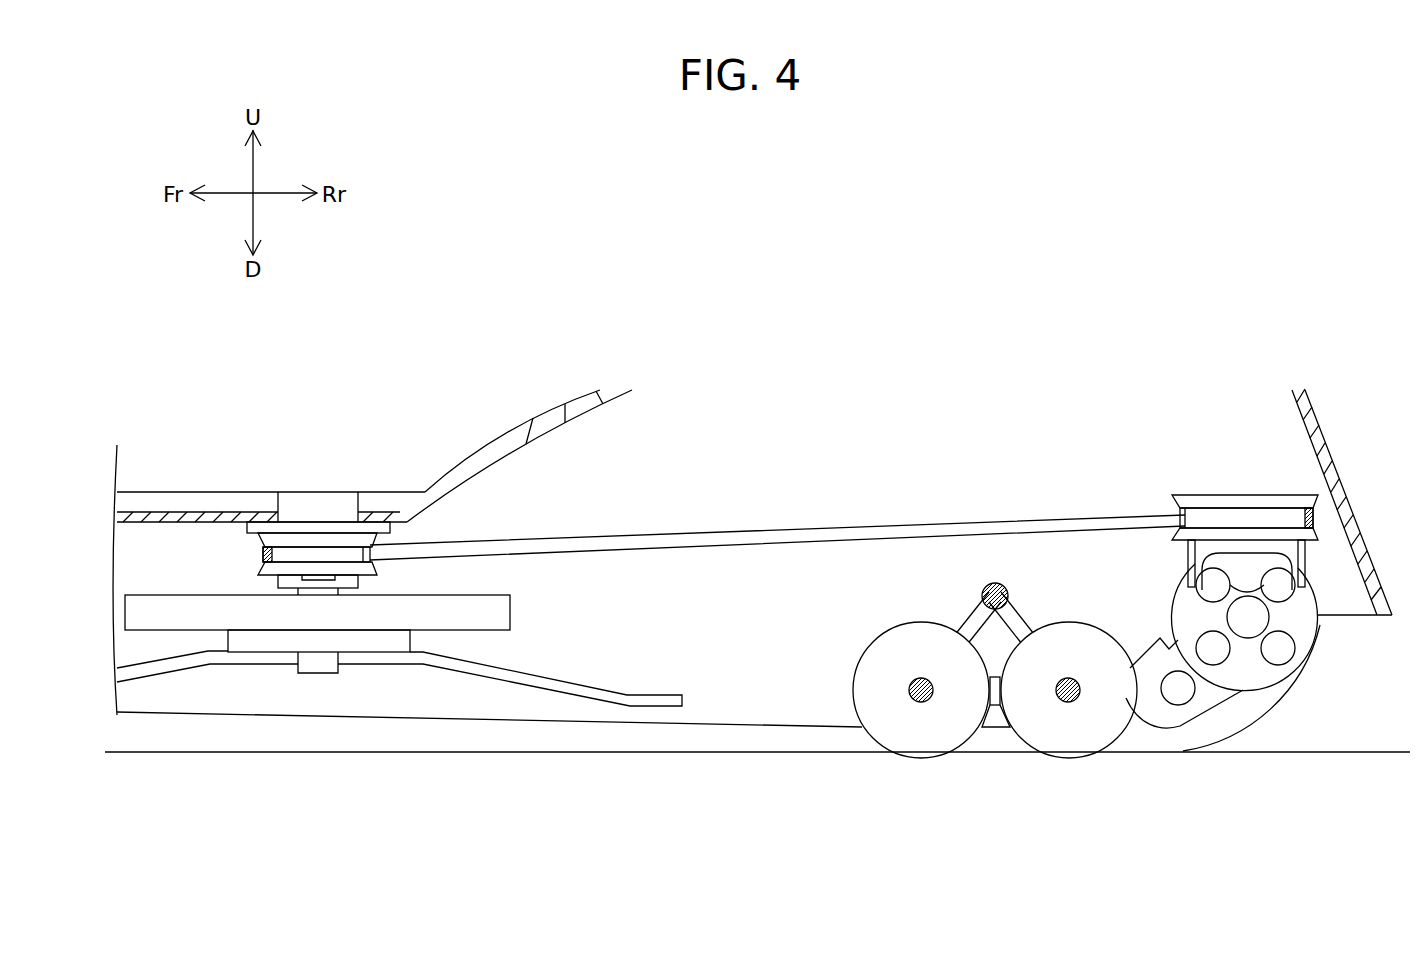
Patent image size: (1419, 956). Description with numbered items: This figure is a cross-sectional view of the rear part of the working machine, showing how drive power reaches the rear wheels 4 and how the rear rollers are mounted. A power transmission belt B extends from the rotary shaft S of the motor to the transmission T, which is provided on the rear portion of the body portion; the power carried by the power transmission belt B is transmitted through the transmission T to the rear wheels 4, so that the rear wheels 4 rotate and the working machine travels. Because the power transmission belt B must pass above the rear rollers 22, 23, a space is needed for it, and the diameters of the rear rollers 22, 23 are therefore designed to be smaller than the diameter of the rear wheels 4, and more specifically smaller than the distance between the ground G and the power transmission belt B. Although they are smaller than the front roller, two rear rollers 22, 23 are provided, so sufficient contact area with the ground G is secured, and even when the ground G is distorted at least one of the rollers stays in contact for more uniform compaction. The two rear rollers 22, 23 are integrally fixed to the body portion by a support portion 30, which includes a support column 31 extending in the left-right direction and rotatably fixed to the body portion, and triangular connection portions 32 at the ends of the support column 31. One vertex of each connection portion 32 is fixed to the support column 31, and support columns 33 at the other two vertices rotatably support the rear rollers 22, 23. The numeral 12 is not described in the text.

The rotary shaft S is at (320, 490).
The power transmission belt B is at (916, 530).
The transmission T is at (1323, 635).
The ground G is at (1325, 750).
The frame arm 12 is at (550, 682).
The rear roller 22 is at (938, 712).
The rear roller 23 is at (1085, 712).
The support portion 30 is at (994, 678).
The support column 31 is at (1000, 585).
The connection portion 32 is at (972, 620).
The support column 33 is at (1135, 617).
The rear wheel 4 is at (1261, 658).